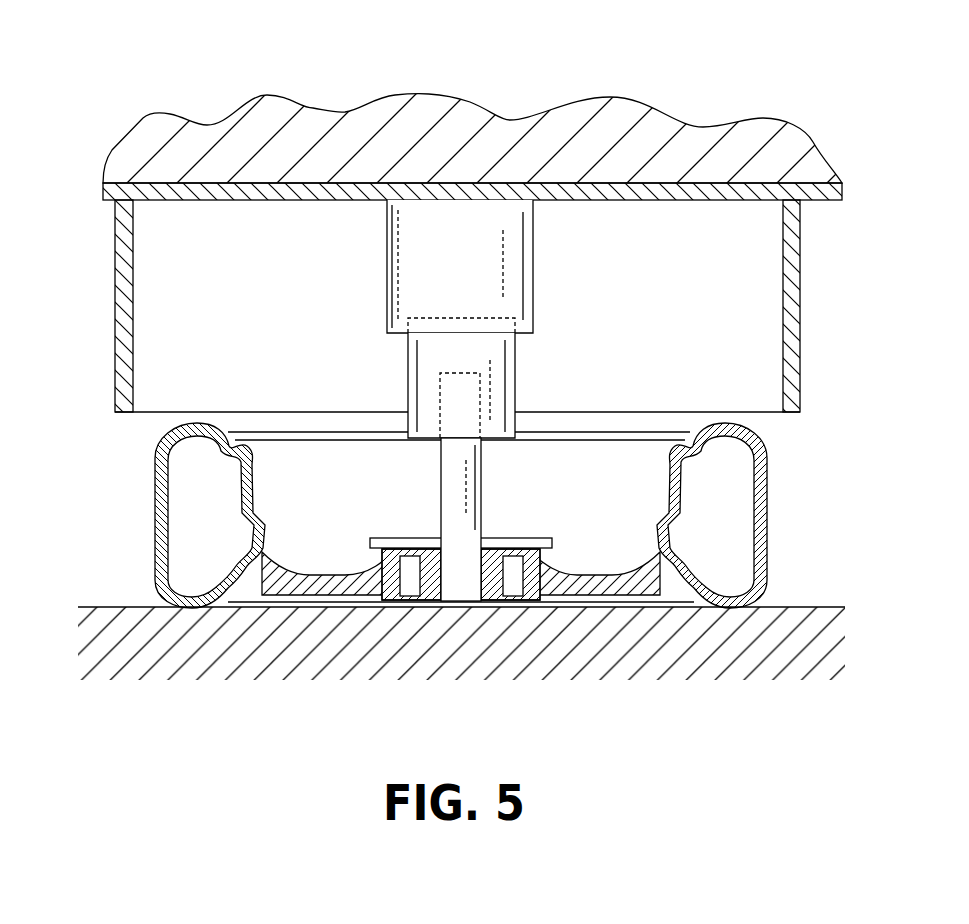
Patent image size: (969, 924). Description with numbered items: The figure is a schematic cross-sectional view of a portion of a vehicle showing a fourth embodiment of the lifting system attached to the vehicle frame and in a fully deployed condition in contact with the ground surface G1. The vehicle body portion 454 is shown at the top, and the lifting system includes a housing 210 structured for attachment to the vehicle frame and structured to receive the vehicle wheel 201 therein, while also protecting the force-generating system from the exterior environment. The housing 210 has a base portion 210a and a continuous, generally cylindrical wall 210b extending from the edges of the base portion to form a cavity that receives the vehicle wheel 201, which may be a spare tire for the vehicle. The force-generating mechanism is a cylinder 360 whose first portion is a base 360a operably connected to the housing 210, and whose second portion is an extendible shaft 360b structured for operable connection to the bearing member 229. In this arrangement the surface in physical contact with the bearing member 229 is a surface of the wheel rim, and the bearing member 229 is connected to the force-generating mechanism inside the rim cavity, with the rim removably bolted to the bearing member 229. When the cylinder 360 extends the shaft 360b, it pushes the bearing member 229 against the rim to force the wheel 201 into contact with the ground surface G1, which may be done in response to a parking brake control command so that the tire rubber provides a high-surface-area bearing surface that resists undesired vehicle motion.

The vehicle body 454 is at (664, 106).
The housing 210 is at (438, 275).
The base portion 210a is at (260, 183).
The wall 210b is at (128, 413).
The cylinder 360 is at (510, 231).
The base 360a is at (487, 247).
The extendible shaft 360b is at (477, 472).
The vehicle wheel 201 is at (767, 505).
The bearing member 229 is at (372, 544).
The ground surface G1 is at (797, 607).